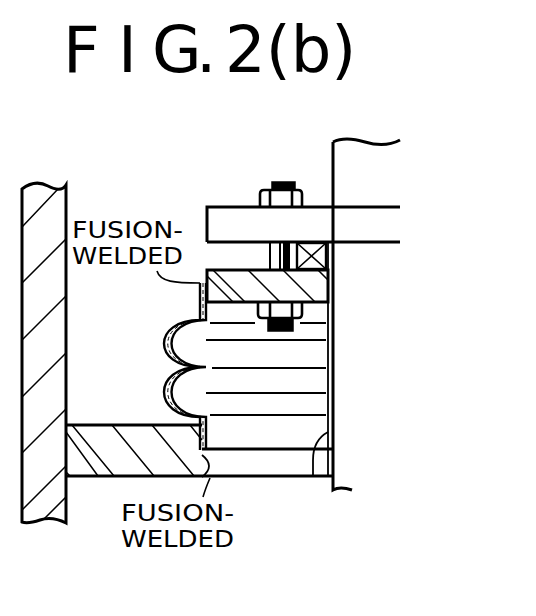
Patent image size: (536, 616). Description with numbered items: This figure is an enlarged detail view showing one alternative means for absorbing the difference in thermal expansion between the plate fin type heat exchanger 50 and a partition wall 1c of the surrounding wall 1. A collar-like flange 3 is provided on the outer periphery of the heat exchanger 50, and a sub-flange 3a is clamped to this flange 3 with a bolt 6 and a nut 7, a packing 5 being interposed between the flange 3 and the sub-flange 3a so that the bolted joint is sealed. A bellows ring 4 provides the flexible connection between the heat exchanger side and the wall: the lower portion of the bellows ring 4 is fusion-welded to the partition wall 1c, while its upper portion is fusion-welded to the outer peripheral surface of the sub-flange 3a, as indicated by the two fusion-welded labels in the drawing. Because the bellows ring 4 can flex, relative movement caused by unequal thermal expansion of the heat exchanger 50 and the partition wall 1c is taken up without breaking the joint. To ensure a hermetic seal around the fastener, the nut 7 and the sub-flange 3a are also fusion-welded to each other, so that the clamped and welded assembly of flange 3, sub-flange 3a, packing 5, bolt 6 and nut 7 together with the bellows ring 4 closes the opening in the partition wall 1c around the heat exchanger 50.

The vehicle body wall 1 is at (61, 198).
The partition wall 1c is at (101, 425).
The flange 3 is at (228, 207).
The sub-flange 3a is at (333, 290).
The bellows ring 4 is at (165, 338).
The packing 5 is at (333, 256).
The bolt 6 is at (286, 183).
The nut 7 is at (302, 198).
The plate fin type heat exchanger 50 is at (313, 478).